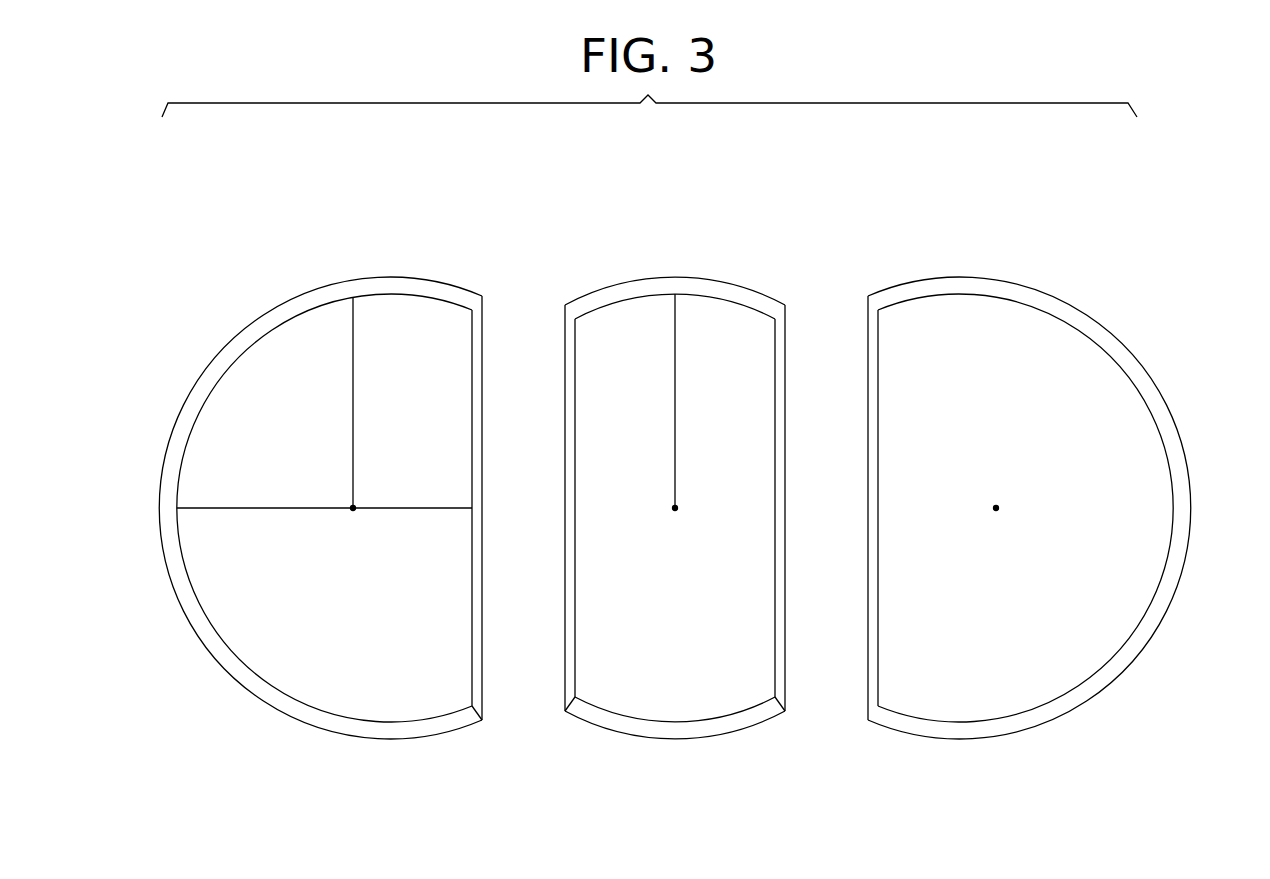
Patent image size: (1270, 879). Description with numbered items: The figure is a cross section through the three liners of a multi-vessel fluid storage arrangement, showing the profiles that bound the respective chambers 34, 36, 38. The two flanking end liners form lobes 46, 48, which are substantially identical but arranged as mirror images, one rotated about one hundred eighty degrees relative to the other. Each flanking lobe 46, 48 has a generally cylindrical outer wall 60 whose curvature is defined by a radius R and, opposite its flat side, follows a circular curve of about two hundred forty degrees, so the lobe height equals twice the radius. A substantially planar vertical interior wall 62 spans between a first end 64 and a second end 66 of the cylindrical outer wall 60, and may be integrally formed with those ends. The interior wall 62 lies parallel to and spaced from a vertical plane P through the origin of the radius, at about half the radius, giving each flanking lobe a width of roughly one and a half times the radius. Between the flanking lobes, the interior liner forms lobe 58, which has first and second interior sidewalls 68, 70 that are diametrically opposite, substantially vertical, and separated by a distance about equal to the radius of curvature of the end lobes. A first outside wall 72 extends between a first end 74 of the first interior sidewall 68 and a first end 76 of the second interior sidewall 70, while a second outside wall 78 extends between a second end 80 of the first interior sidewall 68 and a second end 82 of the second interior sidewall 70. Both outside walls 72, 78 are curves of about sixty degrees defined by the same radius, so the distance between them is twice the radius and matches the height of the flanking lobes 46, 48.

The chamber 34 is at (336, 678).
The chamber 36 is at (983, 673).
The chamber 38 is at (663, 683).
The lobe 46 is at (250, 240).
The lobe 48 is at (1077, 232).
The lobe 58 is at (633, 218).
The cylindrical outer wall 60 is at (300, 725).
The interior wall 62 is at (472, 567).
The first end 64 is at (483, 700).
The second end 66 is at (483, 322).
The first interior sidewall 68 is at (575, 427).
The second interior sidewall 70 is at (775, 538).
The first outside wall 72 is at (668, 739).
The first end 74 is at (565, 710).
The first end 76 is at (787, 698).
The second outside wall 78 is at (700, 279).
The second end 80 is at (565, 322).
The second end 82 is at (787, 323).